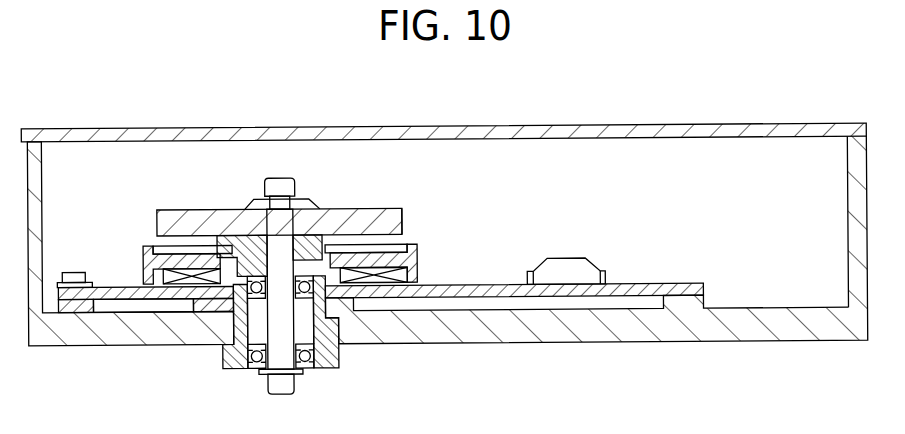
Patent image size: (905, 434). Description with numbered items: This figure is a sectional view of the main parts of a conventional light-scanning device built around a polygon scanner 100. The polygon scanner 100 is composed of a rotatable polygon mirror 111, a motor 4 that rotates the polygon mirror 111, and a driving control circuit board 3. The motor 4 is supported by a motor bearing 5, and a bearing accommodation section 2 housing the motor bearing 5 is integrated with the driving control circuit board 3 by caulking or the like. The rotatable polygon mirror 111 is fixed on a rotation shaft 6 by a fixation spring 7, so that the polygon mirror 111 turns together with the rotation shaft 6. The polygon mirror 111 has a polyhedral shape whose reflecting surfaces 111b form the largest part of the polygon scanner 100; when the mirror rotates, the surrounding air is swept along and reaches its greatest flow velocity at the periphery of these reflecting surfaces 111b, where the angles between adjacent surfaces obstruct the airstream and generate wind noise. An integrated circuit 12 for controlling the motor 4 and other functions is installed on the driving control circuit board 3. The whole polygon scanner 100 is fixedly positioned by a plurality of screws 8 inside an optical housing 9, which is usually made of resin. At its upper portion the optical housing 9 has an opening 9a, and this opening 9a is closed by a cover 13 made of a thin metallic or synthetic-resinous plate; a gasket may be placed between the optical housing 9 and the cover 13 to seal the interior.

The polygon scanner 100 is at (287, 249).
The cover 13 is at (357, 126).
The optical housing 9 is at (474, 343).
The opening 9a is at (848, 157).
The driving control circuit board 3 is at (452, 285).
The screws 8 is at (72, 270).
The integrated circuit 12 is at (573, 262).
The rotatable polygon mirror 111 is at (373, 208).
The reflecting surfaces 111b is at (404, 210).
The fixation spring 7 is at (300, 200).
The motor 4 is at (132, 250).
The bearing accommodation section 2 is at (347, 305).
The motor bearing 5 is at (250, 325).
The rotation shaft 6 is at (290, 381).